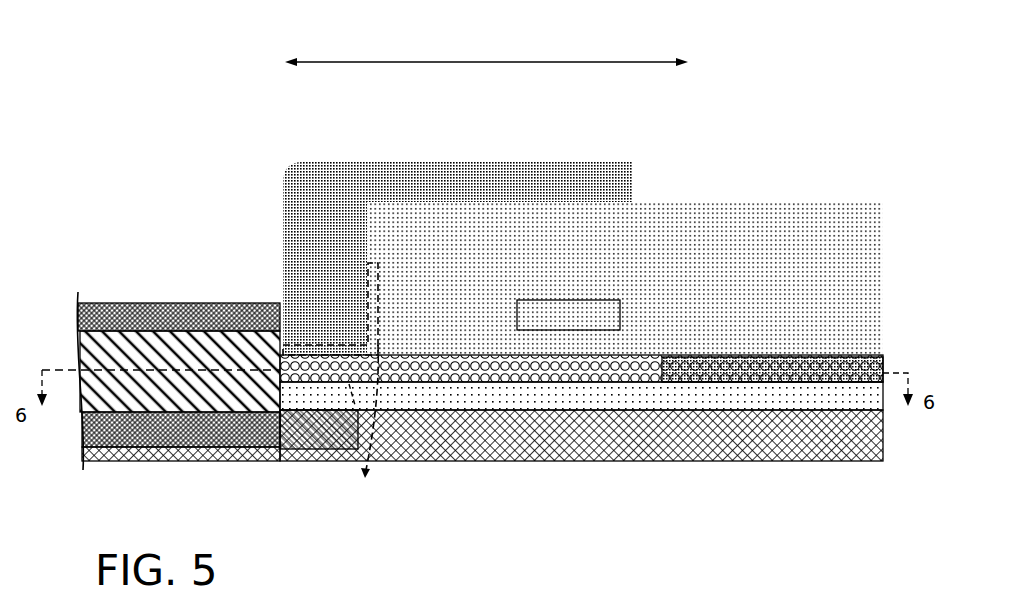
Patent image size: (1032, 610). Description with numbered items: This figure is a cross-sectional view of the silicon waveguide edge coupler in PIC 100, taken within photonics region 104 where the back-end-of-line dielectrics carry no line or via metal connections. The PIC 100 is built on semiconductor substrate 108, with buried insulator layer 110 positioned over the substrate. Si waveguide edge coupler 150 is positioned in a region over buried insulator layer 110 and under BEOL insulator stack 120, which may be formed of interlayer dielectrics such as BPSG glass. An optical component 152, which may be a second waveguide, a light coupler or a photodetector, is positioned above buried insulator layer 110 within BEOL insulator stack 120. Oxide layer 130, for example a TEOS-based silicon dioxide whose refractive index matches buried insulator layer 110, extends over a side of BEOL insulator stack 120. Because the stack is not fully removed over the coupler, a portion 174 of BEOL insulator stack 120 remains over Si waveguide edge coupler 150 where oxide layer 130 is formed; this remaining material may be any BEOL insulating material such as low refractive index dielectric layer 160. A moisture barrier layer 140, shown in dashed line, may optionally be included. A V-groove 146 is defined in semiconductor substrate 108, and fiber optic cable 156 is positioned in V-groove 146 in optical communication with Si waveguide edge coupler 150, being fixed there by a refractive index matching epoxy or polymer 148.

The PIC 100 is at (284, 169).
The photonics region 104 is at (486, 47).
The semiconductor substrate 108 is at (680, 440).
The buried insulator layer 110 is at (790, 396).
The BEOL insulator stack 120 is at (738, 258).
The oxide layer 130 is at (508, 188).
The moisture barrier layer 140 is at (370, 427).
The V-groove 146 is at (228, 448).
The refractive index matching epoxy or polymer 148 is at (295, 423).
The Si waveguide edge coupler 150 is at (597, 377).
The optical component 152 is at (600, 300).
The fiber optic cable 156 is at (130, 286).
The low refractive index dielectric layer 160 is at (279, 340).
The portion of BEOL insulator stack 174 is at (330, 309).